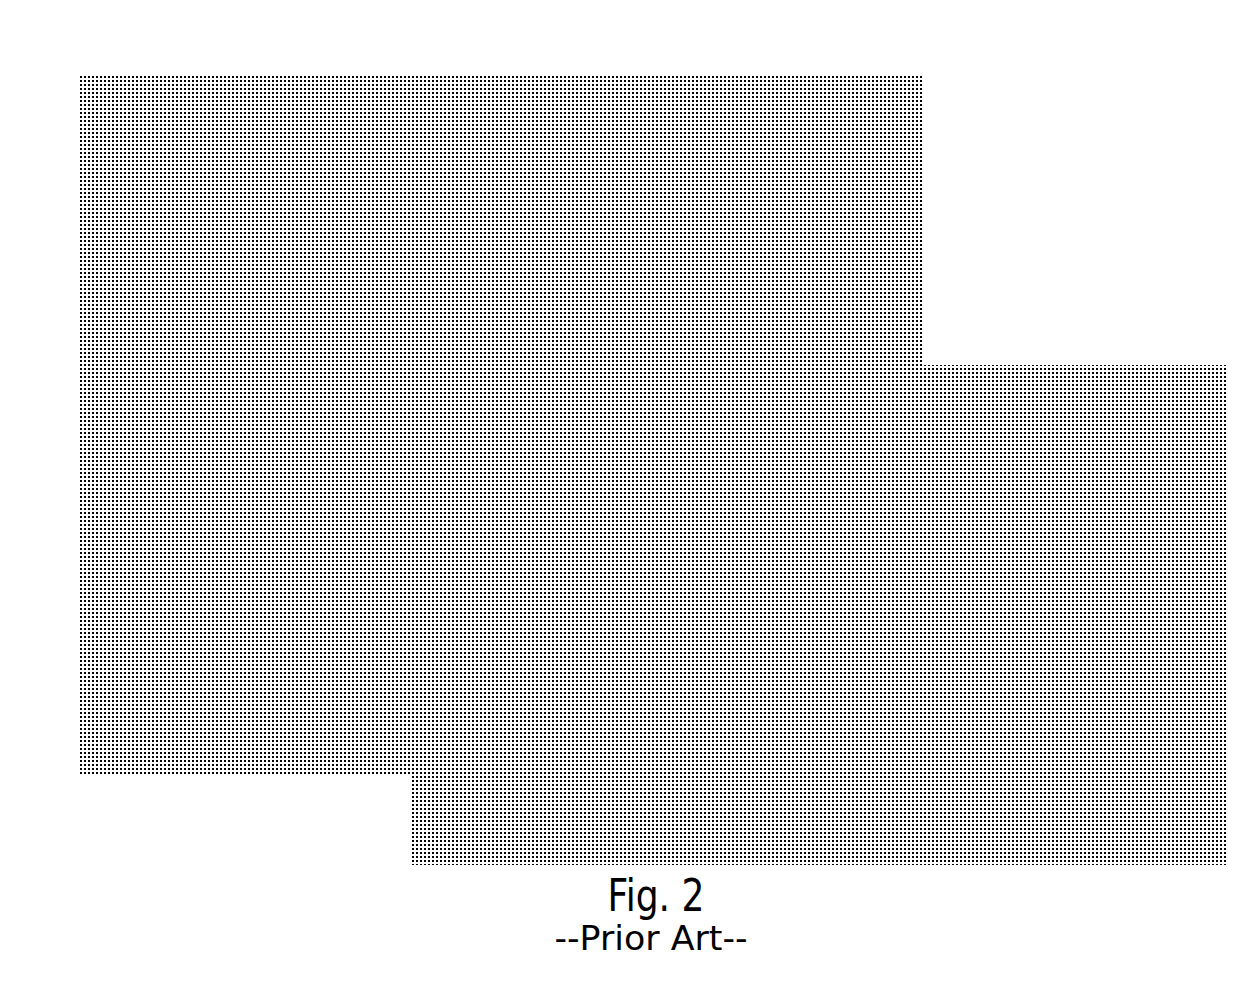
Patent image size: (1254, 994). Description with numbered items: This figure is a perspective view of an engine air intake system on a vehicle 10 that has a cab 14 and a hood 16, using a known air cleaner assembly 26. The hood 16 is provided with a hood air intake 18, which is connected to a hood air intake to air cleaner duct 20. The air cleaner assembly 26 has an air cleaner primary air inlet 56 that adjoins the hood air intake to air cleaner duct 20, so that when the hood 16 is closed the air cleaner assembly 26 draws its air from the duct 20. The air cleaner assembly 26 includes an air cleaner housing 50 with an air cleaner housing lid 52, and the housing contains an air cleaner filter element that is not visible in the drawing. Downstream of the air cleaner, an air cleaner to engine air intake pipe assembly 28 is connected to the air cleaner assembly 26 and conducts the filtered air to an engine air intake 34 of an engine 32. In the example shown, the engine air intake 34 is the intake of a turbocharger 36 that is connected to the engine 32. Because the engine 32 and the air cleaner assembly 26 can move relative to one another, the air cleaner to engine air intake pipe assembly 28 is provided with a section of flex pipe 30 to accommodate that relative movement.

The vehicle 10 is at (872, 164).
The cab 14 is at (770, 125).
The hood 16 is at (1045, 435).
The hood air intake 18 is at (987, 420).
The hood air intake to air cleaner duct 20 is at (810, 403).
The air cleaner assembly 26 is at (935, 590).
The air cleaner to engine air intake pipe assembly 28 is at (713, 470).
The flex pipe 30 is at (603, 565).
The engine 32 is at (817, 798).
The engine air intake 34 is at (640, 672).
The turbocharger 36 is at (653, 702).
The air cleaner housing 50 is at (907, 577).
The air cleaner housing lid 52 is at (995, 553).
The air cleaner primary air inlet 56 is at (907, 458).